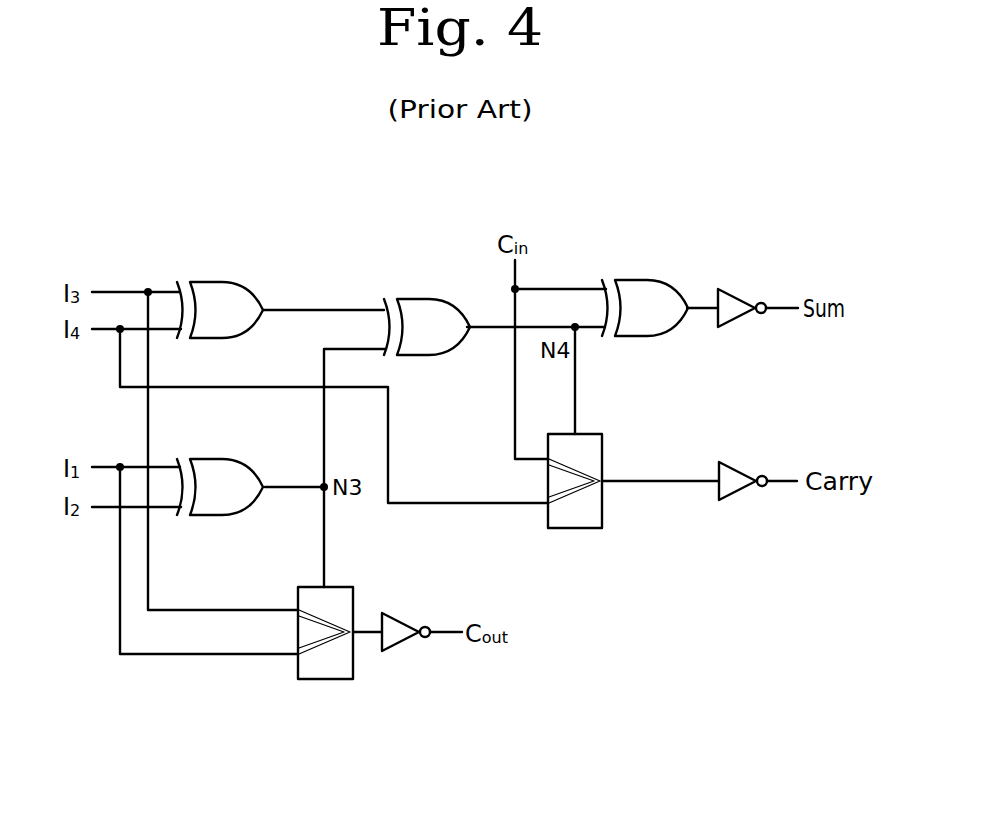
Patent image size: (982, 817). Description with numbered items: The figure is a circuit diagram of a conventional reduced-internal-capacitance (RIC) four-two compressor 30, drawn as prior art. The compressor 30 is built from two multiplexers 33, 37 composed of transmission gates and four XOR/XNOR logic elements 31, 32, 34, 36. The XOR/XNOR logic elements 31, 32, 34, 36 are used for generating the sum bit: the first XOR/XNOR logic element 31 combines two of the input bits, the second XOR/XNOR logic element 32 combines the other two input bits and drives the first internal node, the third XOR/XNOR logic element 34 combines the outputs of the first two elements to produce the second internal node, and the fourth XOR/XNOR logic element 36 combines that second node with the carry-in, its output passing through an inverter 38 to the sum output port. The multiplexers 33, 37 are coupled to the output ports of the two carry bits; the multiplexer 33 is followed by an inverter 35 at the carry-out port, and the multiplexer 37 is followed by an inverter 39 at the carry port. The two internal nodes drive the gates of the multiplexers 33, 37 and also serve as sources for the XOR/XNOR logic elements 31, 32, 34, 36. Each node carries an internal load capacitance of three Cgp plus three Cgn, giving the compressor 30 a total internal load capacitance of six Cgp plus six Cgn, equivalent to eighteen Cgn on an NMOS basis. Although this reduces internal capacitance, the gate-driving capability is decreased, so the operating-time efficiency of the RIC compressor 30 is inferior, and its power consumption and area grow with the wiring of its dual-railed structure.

The RIC 4-2 compressor 30 is at (795, 192).
The XOR/XNOR logic element 31 is at (207, 282).
The XOR/XNOR logic element 32 is at (210, 459).
The multiplexer 33 is at (340, 587).
The XOR/XNOR logic element 34 is at (412, 299).
The inverter 35 is at (400, 614).
The XOR/XNOR logic element 36 is at (630, 280).
The multiplexer 37 is at (590, 434).
The inverter 38 is at (738, 291).
The inverter 39 is at (740, 463).